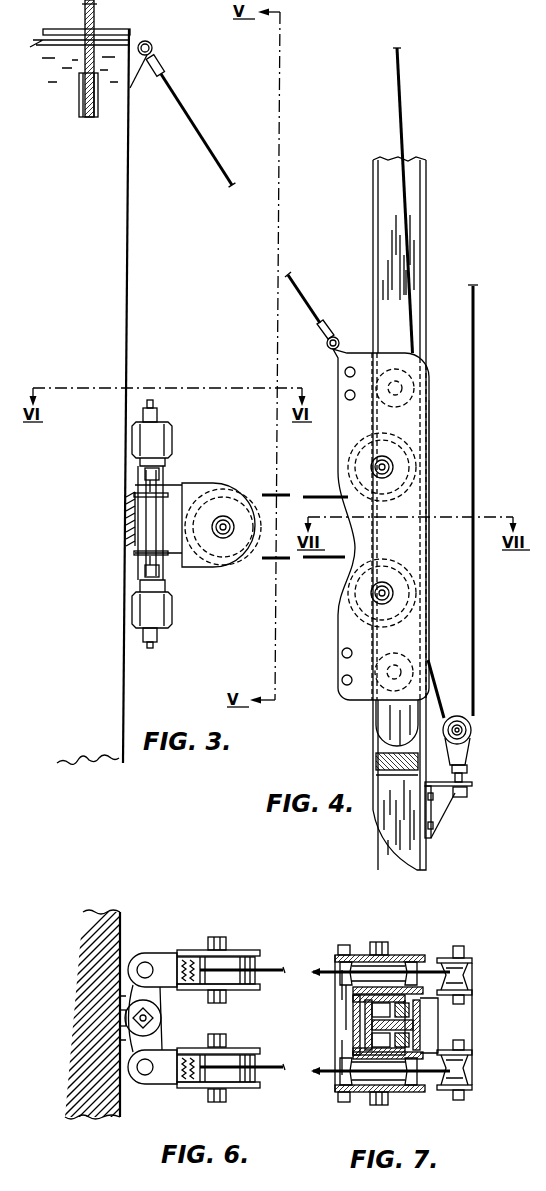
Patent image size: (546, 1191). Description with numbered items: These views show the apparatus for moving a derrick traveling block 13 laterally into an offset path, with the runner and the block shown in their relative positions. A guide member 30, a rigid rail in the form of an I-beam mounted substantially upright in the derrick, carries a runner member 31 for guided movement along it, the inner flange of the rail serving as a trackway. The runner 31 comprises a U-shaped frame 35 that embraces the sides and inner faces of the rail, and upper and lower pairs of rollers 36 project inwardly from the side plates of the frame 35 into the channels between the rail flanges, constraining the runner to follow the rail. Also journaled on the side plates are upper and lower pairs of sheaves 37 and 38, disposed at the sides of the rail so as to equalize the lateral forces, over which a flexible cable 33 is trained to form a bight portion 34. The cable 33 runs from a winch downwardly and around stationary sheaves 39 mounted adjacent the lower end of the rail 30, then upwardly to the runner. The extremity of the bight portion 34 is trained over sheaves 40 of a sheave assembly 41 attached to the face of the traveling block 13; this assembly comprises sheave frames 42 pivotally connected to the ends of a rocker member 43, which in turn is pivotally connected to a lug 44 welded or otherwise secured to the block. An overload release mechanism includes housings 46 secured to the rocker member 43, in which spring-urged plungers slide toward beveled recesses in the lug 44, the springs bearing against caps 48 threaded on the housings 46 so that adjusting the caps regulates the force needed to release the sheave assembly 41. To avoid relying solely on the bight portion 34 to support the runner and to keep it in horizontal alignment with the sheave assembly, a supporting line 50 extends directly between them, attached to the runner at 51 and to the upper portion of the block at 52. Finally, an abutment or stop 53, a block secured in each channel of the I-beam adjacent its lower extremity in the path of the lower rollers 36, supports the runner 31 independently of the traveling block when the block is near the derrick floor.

In FIG. 3, the traveling block 13 is at (115, 255).
In FIG. 6, the traveling block 13 is at (120, 930).
In FIG. 4, the guide member 30 is at (418, 247).
In FIG. 7, the guide member 30 is at (365, 1018).
In FIG. 4, the runner member 31 is at (358, 352).
In FIG. 4, the flexible cable 33 is at (400, 87).
In FIG. 4, the bight portion 34 is at (328, 560).
In FIG. 6, the bight portion 34 is at (275, 965).
In FIG. 7, the bight portion 34 is at (318, 1076).
In FIG. 4, the U-shaped frame 35 is at (406, 537).
In FIG. 7, the U-shaped frame 35 is at (408, 957).
In FIG. 4, the rollers 36 is at (418, 358).
In FIG. 7, the rollers 36 is at (402, 1040).
In FIG. 4, the upper sheaves 37 is at (347, 436).
In FIG. 4, the lower sheaves 38 is at (337, 630).
In FIG. 7, the lower sheaves 38 is at (368, 965).
In FIG. 4, the sheaves 39 is at (470, 735).
In FIG. 7, the sheaves 39 is at (462, 960).
In FIG. 3, the sheaves 40 is at (201, 492).
In FIG. 6, the sheaves 40 is at (243, 957).
In FIG. 3, the sheave assembly 41 is at (212, 482).
In FIG. 6, the sheave assembly 41 is at (190, 950).
In FIG. 3, the sheave frames 42 is at (238, 545).
In FIG. 6, the sheave frames 42 is at (244, 1050).
In FIG. 3, the rocker member 43 is at (138, 545).
In FIG. 6, the rocker member 43 is at (157, 995).
In FIG. 3, the lug 44 is at (128, 524).
In FIG. 6, the lug 44 is at (118, 1033).
In FIG. 3, the housings 46 is at (140, 468).
In FIG. 3, the caps 48 is at (160, 440).
In FIG. 6, the caps 48 is at (128, 1015).
In FIG. 3, the supporting line 50 is at (203, 137).
In FIG. 4, the supporting line 50 is at (303, 299).
In FIG. 4, the attachment point on runner 51 is at (326, 344).
In FIG. 3, the attachment point on block 52 is at (150, 42).
In FIG. 4, the abutment or stop 53 is at (380, 757).
In FIG. 7, the abutment or stop 53 is at (422, 1030).